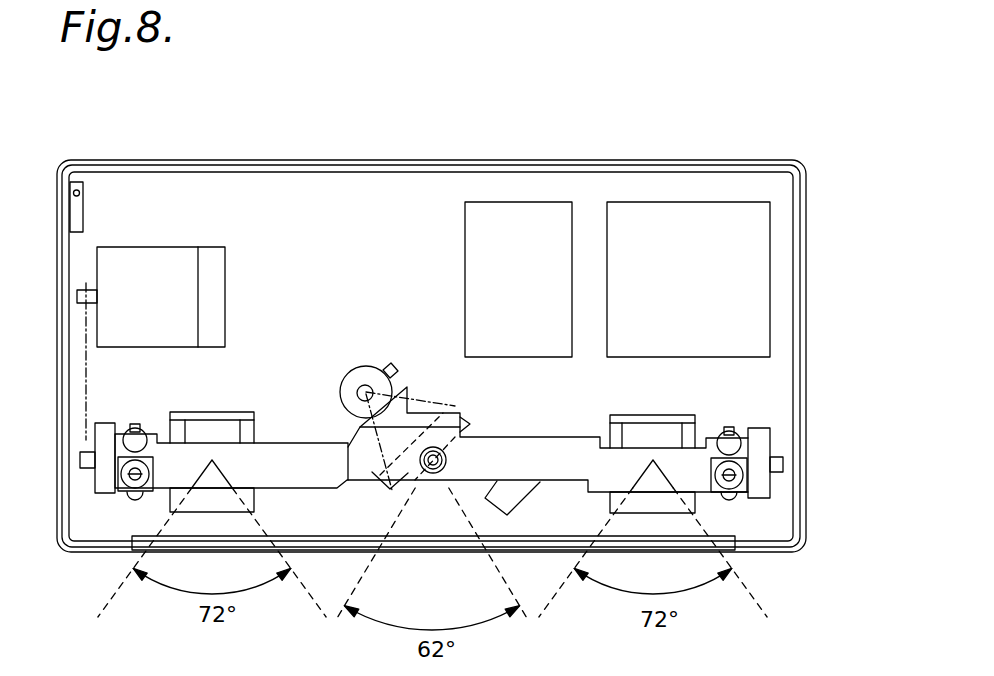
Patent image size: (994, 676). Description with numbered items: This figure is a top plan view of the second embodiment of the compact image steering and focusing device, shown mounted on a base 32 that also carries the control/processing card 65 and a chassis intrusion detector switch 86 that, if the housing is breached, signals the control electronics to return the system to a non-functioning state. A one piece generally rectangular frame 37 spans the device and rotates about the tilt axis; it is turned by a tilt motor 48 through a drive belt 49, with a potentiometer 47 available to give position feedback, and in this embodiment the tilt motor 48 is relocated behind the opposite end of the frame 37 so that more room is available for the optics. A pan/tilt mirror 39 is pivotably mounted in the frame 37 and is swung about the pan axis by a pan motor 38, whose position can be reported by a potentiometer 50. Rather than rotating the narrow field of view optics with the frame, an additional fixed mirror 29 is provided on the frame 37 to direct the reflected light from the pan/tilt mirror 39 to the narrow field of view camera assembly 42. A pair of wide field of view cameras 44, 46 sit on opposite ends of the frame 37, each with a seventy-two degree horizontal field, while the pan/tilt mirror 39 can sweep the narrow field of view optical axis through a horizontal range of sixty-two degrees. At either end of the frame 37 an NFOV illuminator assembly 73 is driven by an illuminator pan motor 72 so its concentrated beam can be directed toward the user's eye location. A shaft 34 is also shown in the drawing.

The base 32 is at (782, 300).
The chassis intrusion detector switch 86 is at (80, 205).
The tilt motor 48 is at (160, 258).
The potentiometer 47 is at (214, 275).
The drive belt 49 is at (87, 399).
The narrow field of view camera assembly 42 is at (533, 223).
The control/processing card 65 is at (697, 237).
The shaft 34 is at (285, 472).
The fixed mirror 29 is at (550, 433).
The pan motor 38 is at (348, 380).
The potentiometer 50 is at (395, 362).
The pan/tilt mirror 39 is at (455, 405).
The wide field of view camera 44 is at (210, 417).
The wide field of view camera 46 is at (662, 415).
The frame 37 is at (752, 419).
The illuminator pan motor 72 is at (140, 437).
The NFOV illuminator assembly 73 is at (113, 480).